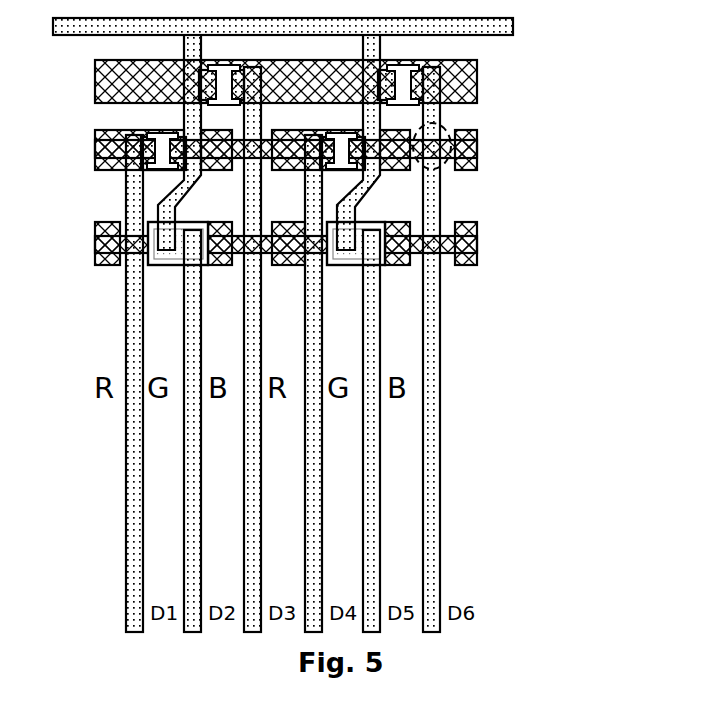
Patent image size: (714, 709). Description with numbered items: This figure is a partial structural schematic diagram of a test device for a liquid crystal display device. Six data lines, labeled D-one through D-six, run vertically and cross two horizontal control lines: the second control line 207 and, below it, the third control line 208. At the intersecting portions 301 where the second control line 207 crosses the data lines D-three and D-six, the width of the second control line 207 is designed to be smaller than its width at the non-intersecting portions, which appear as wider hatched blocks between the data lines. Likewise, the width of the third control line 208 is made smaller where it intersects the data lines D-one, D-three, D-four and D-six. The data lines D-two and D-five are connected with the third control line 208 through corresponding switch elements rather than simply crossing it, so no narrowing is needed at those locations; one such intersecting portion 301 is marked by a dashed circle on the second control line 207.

The second control line 207 is at (333, 152).
The third control line 208 is at (333, 243).
The intersecting portion 301 is at (450, 147).